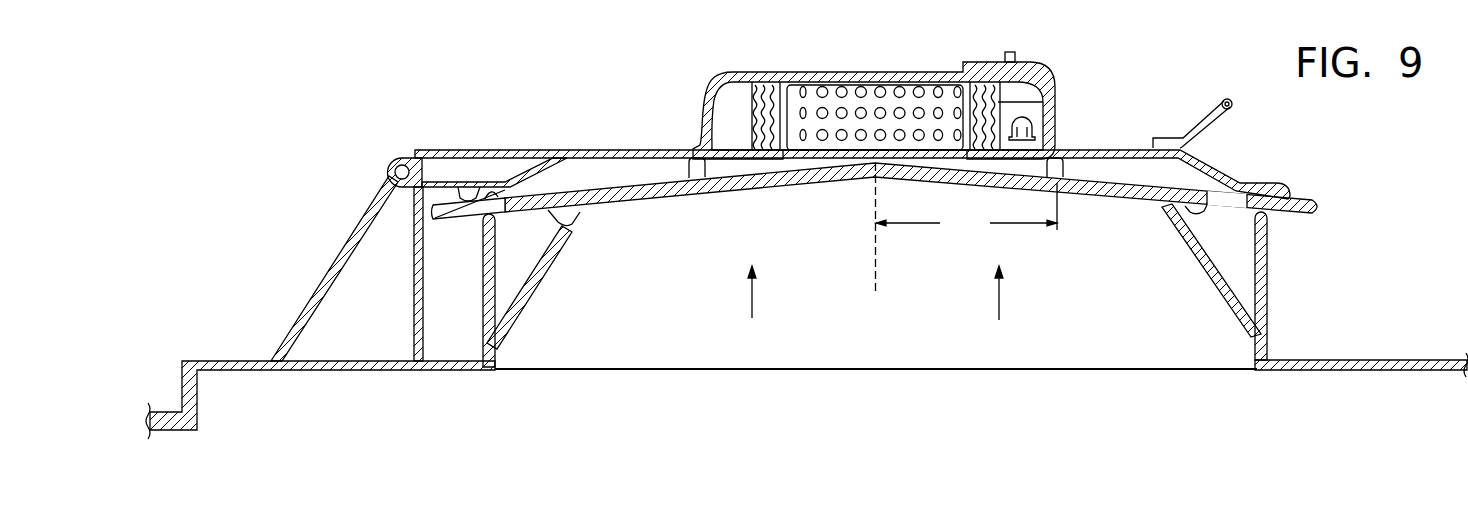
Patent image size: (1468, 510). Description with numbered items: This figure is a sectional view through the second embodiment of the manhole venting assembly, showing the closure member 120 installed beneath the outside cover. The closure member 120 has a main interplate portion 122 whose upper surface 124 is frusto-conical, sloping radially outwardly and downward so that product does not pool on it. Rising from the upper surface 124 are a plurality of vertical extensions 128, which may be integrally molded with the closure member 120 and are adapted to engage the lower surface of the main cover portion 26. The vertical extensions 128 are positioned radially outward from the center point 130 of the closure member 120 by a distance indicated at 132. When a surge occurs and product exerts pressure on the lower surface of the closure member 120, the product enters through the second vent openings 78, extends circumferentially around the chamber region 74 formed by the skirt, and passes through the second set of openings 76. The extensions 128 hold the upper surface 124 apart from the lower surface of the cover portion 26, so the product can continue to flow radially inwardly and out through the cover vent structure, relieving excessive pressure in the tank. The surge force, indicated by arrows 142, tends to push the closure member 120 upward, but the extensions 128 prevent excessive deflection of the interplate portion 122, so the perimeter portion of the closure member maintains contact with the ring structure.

The main inner plate portion 26 is at (658, 150).
The circumferential venting passageway 74 is at (537, 278).
The through opening 76 is at (1227, 197).
The second vent opening 78 is at (562, 242).
The closure member 120 is at (1092, 172).
The main interplate portion 122 is at (633, 190).
The upper surface 124 is at (585, 185).
The vertical extensions 128 is at (690, 167).
The center point 130 is at (875, 270).
The distance 132 is at (966, 209).
The surge force arrows 142 is at (750, 307).